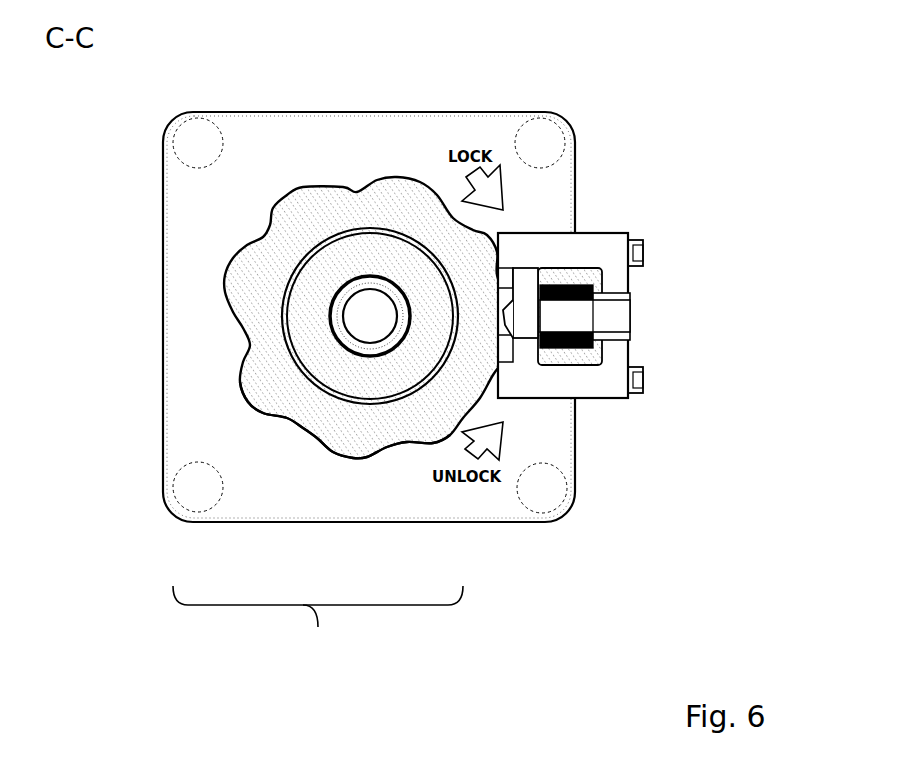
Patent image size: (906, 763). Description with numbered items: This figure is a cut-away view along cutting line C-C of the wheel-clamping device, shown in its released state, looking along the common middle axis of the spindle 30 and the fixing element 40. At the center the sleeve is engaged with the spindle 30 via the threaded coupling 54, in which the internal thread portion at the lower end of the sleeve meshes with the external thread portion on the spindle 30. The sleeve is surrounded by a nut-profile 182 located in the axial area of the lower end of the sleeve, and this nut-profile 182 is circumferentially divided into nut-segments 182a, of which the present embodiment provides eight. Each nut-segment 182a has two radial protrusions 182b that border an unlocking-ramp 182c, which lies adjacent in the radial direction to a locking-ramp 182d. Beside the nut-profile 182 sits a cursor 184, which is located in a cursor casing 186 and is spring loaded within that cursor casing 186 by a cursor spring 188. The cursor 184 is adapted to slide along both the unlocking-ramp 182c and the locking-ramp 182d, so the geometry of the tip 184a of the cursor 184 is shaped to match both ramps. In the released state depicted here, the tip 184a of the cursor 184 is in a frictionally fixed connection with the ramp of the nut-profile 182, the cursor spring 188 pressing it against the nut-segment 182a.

The nut-profile 182 is at (387, 203).
The nut-segments 182a is at (318, 520).
The radial protrusions 182b is at (332, 455).
The unlocking-ramp 182c is at (363, 457).
The locking-ramp 182d is at (410, 443).
The cursor 184 is at (518, 316).
The tip of cursor 184a is at (520, 312).
The cursor casing 186 is at (605, 248).
The cursor spring 188 is at (562, 347).
The threaded coupling 54 is at (290, 280).
The spindle 30 is at (312, 323).
The fixing element 40 is at (355, 345).